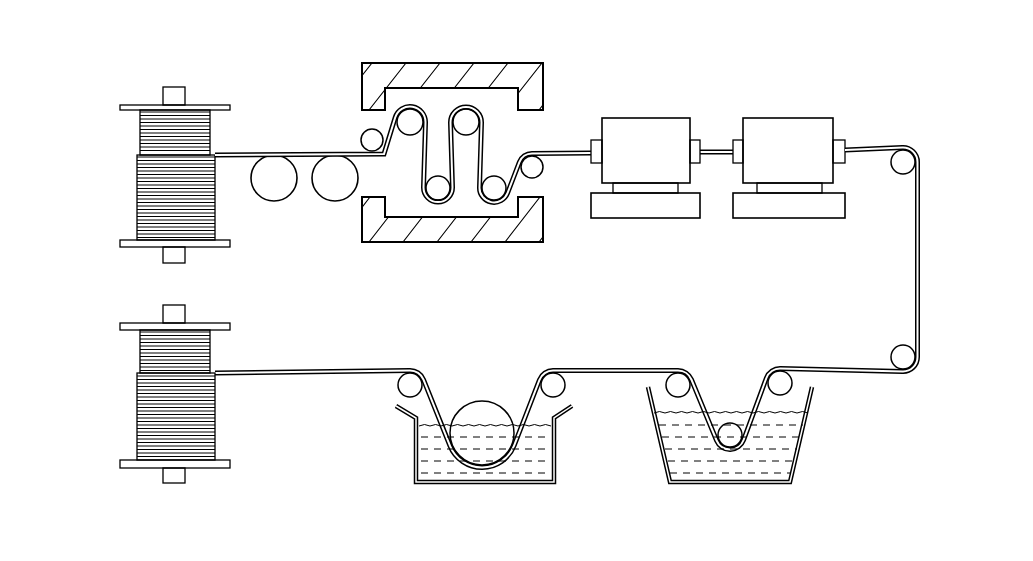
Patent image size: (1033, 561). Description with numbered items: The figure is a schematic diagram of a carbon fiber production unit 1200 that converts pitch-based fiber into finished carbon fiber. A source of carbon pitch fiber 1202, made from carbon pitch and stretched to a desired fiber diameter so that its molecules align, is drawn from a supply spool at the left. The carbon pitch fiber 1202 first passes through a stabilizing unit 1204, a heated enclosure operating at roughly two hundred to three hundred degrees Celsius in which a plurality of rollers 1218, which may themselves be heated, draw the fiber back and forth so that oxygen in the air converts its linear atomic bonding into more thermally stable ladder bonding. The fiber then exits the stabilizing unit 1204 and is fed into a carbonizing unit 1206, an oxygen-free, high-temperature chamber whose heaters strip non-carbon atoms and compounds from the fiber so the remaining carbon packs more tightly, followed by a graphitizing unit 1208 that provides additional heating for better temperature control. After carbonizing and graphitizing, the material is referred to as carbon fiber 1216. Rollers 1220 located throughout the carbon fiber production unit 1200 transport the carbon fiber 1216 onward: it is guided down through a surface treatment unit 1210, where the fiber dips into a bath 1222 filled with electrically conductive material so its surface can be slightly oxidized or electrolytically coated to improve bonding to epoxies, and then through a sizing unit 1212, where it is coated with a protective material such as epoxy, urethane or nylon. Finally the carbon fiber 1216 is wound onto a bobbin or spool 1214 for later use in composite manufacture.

The carbon fiber production unit 1200 is at (667, 71).
The carbon pitch fiber 1202 is at (110, 167).
The stabilizing unit 1204 is at (354, 80).
The carbonizing unit 1206 is at (672, 167).
The graphitizing unit 1208 is at (813, 167).
The surface treatment unit 1210 is at (812, 445).
The sizing unit 1212 is at (437, 453).
The spool 1214 is at (110, 391).
The carbon fiber 1216 is at (915, 257).
The rollers 1218 is at (409, 134).
The rollers 1220 is at (902, 175).
The bath 1222 is at (688, 455).